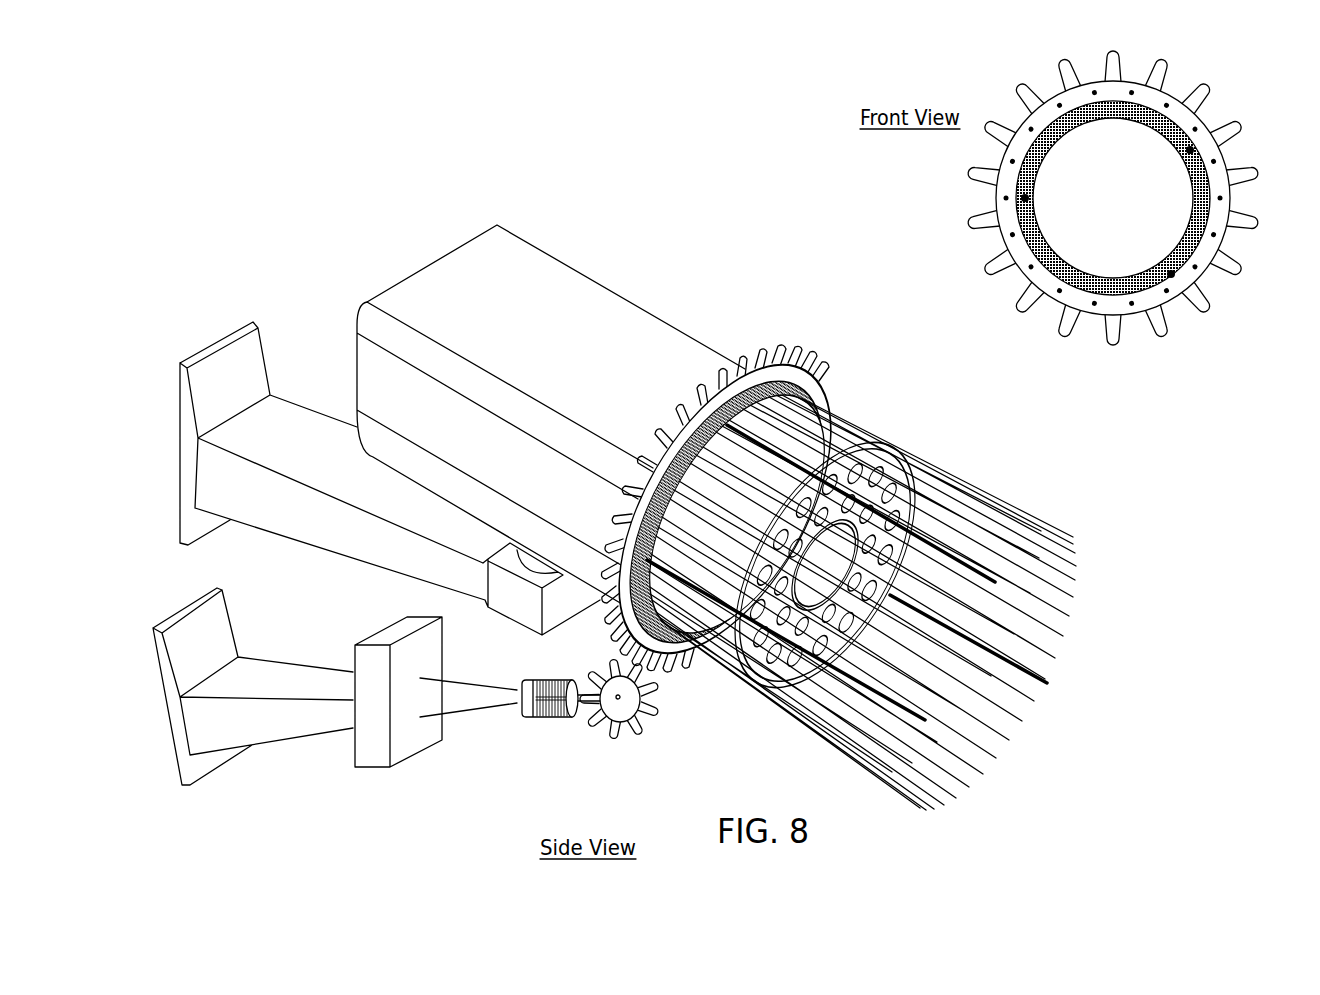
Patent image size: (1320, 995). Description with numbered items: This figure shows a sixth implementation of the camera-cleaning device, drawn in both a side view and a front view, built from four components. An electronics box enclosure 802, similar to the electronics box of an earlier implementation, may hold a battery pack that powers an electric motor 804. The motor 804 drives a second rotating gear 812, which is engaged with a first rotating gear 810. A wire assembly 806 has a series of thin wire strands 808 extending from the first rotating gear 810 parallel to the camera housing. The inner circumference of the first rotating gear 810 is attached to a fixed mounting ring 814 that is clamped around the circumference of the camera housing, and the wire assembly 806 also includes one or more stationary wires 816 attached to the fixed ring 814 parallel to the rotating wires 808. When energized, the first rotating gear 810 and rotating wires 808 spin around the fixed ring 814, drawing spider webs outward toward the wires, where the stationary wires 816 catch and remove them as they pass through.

The electronics box enclosure 802 is at (362, 768).
The electric motor 804 is at (545, 725).
The wire assembly 806 is at (945, 437).
The thin wire strands 808 is at (1068, 522).
The first rotating gear 810 is at (808, 352).
The second rotating gear 812 is at (625, 733).
The fixed mounting ring 814 is at (738, 392).
The stationary wires 816 is at (1047, 683).